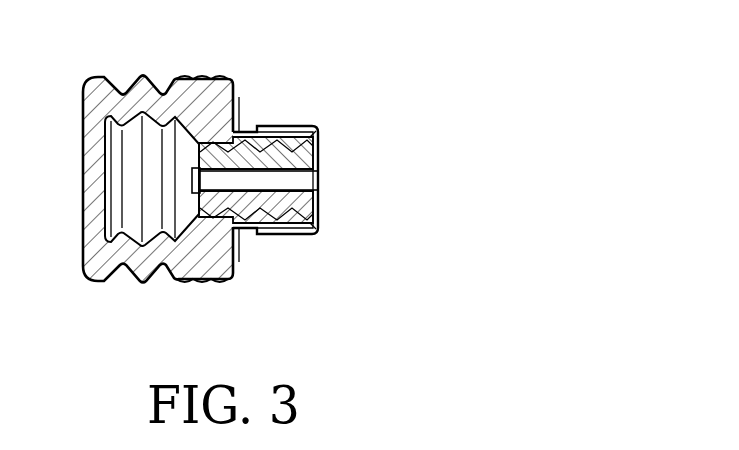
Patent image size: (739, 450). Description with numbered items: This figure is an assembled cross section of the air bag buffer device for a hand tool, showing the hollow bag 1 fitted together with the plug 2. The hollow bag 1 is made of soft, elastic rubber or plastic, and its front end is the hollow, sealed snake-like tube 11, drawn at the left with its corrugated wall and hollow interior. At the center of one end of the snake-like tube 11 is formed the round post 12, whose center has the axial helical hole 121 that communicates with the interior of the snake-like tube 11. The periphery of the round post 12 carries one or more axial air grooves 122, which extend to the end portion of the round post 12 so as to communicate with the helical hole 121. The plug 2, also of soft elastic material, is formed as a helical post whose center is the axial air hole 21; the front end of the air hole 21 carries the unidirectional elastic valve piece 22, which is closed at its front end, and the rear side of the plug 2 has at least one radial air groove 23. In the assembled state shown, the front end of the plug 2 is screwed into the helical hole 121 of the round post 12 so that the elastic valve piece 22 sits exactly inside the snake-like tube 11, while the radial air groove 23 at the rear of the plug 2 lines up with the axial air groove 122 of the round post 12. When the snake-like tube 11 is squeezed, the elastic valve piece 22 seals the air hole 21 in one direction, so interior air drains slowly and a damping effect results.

The hollow bag 1 is at (177, 56).
The snake-like tube 11 is at (130, 80).
The round post 12 is at (292, 140).
The helical hole 121 is at (257, 126).
The axial air groove 122 is at (319, 128).
The plug 2 is at (307, 152).
The axial air hole 21 is at (306, 180).
The unidirectional elastic valve piece 22 is at (193, 180).
The radial air groove 23 is at (313, 208).